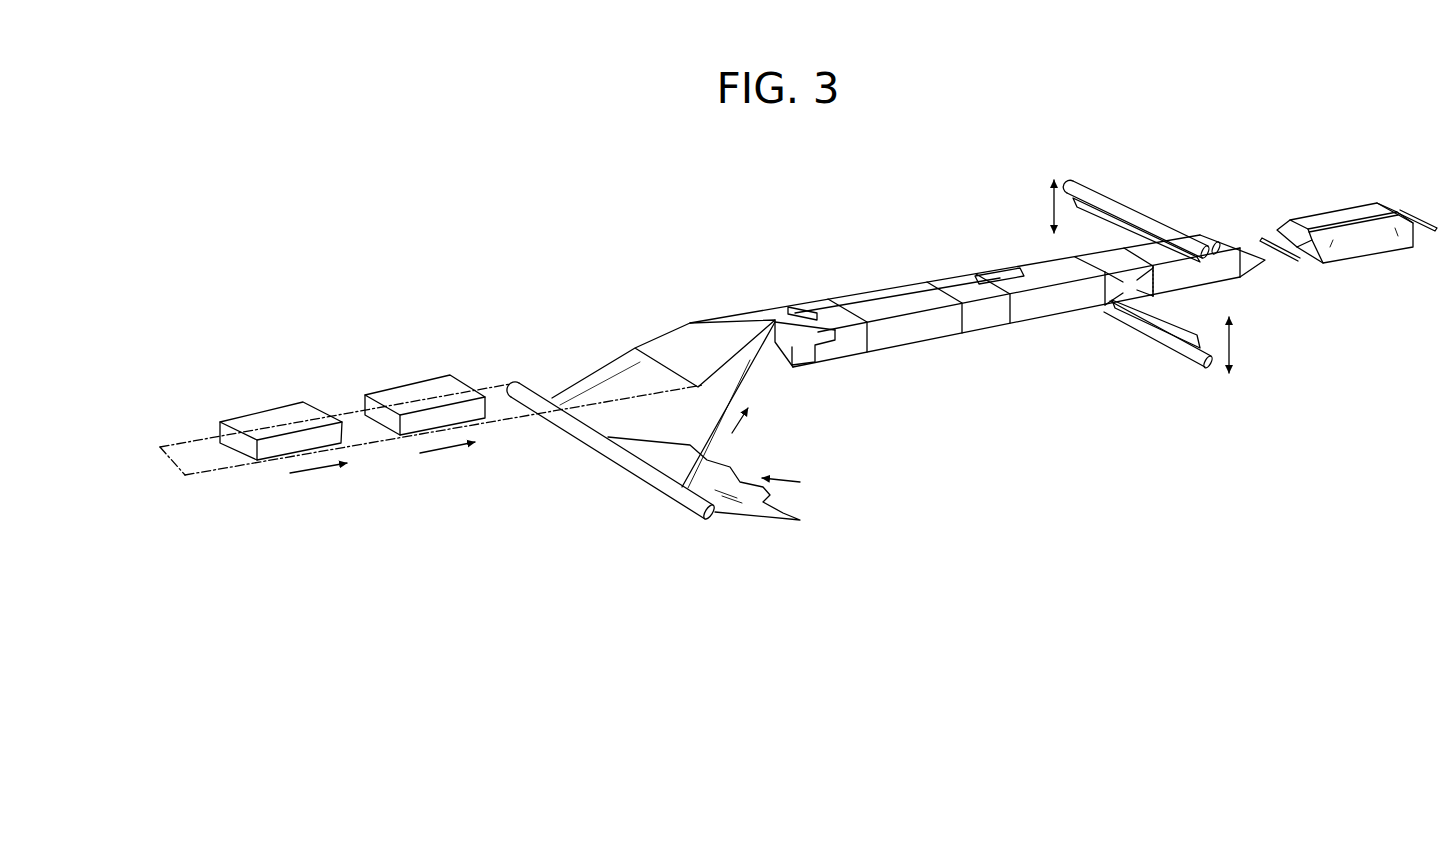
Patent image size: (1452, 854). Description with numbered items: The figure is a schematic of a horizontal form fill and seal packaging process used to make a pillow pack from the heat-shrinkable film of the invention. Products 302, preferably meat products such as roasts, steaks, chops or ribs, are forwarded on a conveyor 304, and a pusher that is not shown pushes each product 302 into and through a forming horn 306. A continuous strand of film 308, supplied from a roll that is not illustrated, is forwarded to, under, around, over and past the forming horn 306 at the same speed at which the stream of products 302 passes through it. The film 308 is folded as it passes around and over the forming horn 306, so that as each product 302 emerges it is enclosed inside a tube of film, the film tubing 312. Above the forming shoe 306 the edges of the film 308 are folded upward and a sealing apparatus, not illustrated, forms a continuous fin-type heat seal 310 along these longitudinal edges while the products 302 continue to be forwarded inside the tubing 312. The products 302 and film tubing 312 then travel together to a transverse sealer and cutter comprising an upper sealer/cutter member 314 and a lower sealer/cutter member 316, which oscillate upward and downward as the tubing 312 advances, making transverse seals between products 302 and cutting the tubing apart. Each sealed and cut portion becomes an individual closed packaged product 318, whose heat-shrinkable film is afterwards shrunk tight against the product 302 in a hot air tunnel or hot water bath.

The product 302 is at (286, 416).
The conveyor 304 is at (512, 422).
The forming horn 306 is at (680, 365).
The continuous strand of film 308 is at (773, 495).
The continuous fin-type heat seal 310 is at (789, 304).
The film tubing 312 is at (847, 344).
The upper sealer/cutter member 314 is at (1137, 210).
The lower sealer/cutter member 316 is at (1166, 345).
The packaged product 318 is at (1331, 217).